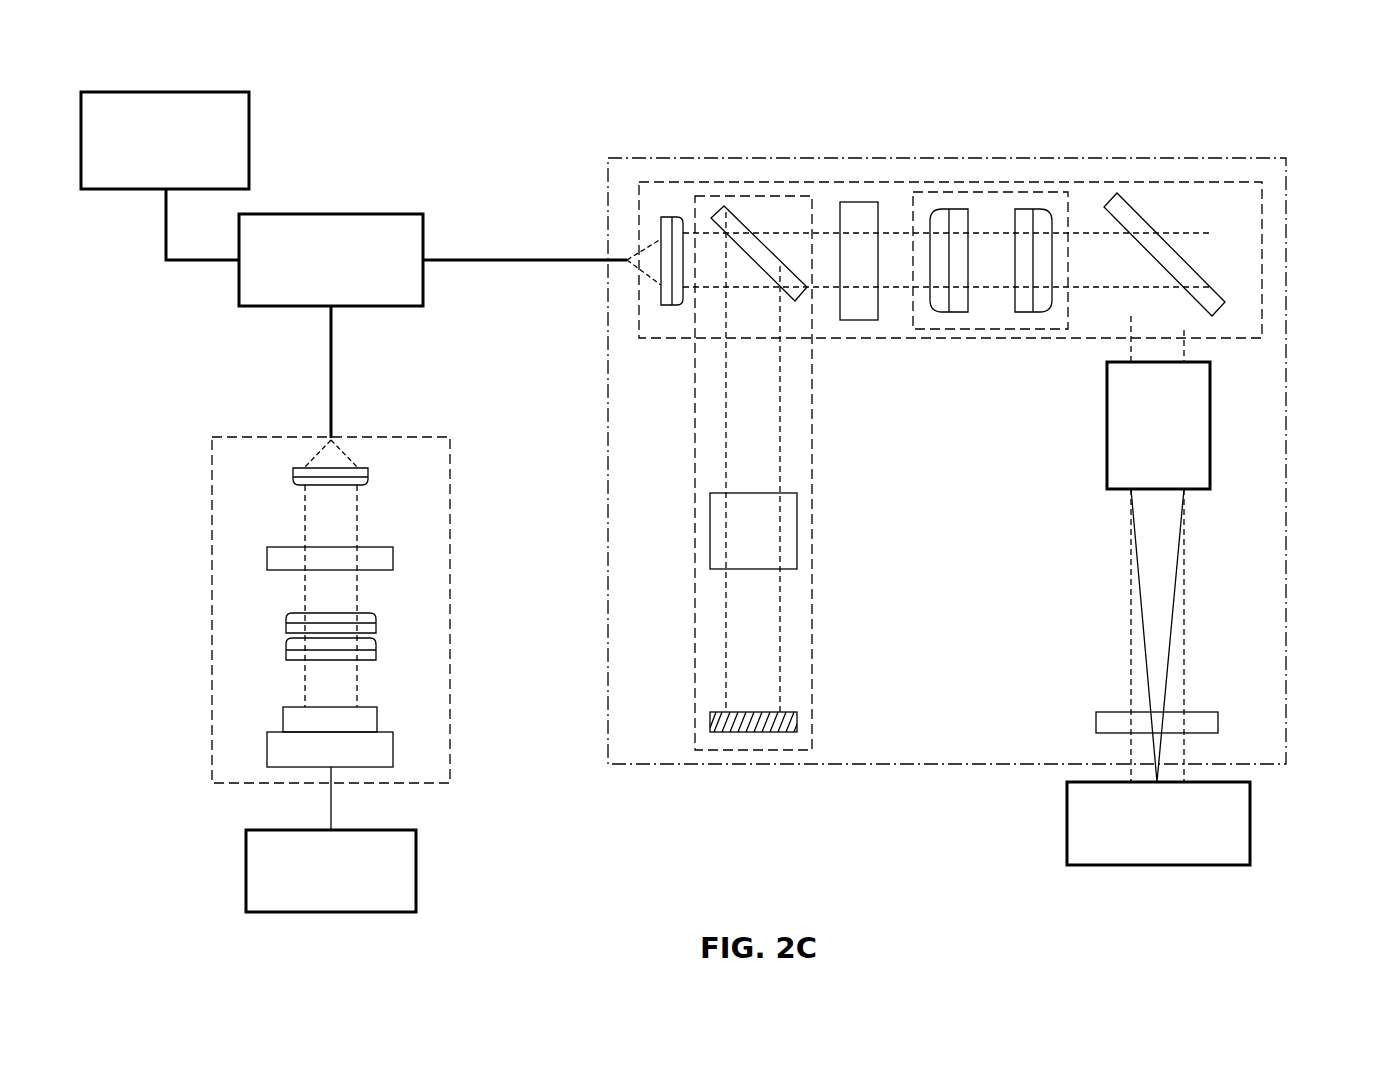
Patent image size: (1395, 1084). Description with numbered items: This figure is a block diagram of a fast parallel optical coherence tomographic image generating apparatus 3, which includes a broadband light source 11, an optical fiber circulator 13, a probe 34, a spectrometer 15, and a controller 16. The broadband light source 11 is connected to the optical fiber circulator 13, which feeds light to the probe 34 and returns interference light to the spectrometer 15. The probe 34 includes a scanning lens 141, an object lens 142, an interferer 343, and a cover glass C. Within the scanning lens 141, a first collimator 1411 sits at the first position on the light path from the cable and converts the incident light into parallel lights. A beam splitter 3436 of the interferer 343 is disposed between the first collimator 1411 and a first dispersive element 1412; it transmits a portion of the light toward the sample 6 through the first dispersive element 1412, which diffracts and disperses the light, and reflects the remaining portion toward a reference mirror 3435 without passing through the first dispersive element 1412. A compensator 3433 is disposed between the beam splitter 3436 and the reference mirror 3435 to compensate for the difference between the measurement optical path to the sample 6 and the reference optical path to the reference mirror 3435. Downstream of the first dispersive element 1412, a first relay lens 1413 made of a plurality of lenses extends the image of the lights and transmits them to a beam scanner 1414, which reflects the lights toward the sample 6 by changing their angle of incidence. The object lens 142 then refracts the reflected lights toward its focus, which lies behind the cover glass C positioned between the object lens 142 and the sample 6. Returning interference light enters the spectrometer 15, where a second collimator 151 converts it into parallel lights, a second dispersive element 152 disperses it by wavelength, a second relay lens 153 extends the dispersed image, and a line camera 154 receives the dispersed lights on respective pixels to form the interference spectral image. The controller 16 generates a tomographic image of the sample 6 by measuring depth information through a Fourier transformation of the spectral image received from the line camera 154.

The broadband light source 11 is at (182, 90).
The optical fiber circulator 13 is at (370, 213).
The fast parallel optical coherence tomographic image generating apparatus 3 is at (760, 68).
The spectrometer 15 is at (212, 477).
The second collimator 151 is at (368, 472).
The second dispersive element 152 is at (393, 557).
The second relay lens 153 is at (376, 628).
The line camera 154 is at (393, 748).
The controller 16 is at (368, 829).
The probe 34 is at (1287, 233).
The scanning lens 141 is at (1007, 338).
The first collimator 1411 is at (672, 217).
The first dispersive element 1412 is at (858, 202).
The first relay lens 1413 is at (991, 190).
The beam scanner 1414 is at (1145, 218).
The object lens 142 is at (1210, 423).
The interferer 343 is at (812, 627).
The beam splitter 3436 is at (730, 212).
The compensator 3433 is at (797, 530).
The reference mirror 3435 is at (797, 720).
The cover glass C is at (1218, 722).
The sample 6 is at (1250, 826).